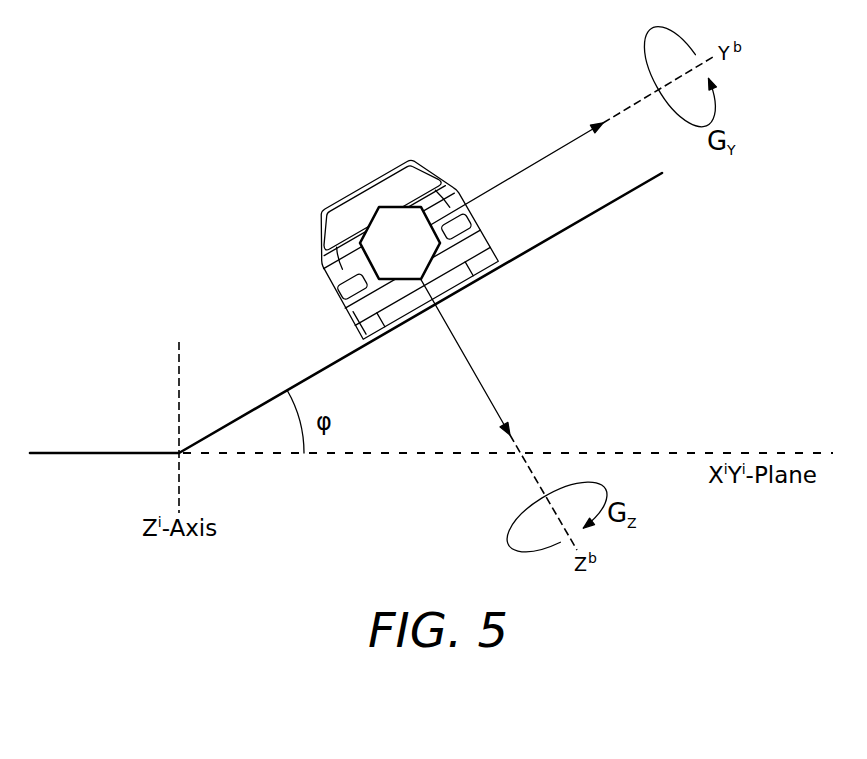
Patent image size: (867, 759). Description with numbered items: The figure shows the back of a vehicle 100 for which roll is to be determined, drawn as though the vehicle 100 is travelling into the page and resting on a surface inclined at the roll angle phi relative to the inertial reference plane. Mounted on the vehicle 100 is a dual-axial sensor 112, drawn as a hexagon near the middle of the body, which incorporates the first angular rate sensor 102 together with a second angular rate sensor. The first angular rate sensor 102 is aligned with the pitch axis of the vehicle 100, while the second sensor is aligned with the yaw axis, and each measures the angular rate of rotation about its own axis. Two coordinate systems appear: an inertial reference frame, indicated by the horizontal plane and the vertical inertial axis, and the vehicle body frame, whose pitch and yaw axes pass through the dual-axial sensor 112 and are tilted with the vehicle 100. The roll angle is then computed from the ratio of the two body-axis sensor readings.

The vehicle 100 is at (426, 163).
The dual-axial sensor 112 is at (372, 216).
The first angular rate sensor 102 is at (420, 313).